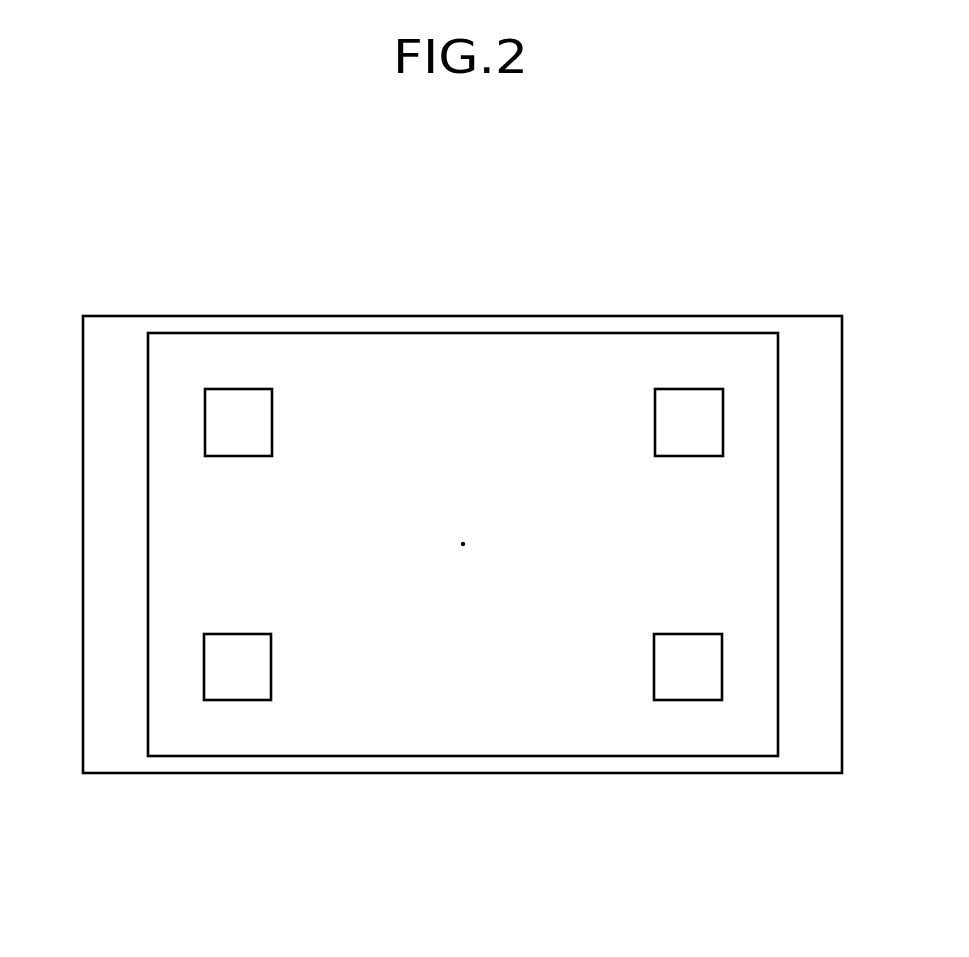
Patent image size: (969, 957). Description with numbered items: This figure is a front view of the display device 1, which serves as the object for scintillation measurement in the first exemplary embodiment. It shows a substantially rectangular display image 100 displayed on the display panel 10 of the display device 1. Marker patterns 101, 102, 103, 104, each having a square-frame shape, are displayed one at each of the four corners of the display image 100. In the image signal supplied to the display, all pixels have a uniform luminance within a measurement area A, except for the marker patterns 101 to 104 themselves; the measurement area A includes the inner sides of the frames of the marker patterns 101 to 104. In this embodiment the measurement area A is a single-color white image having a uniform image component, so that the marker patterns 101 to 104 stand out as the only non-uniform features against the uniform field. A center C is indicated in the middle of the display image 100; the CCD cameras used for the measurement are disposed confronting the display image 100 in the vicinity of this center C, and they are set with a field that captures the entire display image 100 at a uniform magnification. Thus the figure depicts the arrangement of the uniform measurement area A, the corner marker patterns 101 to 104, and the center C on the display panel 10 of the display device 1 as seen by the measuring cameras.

The display device 1 is at (681, 237).
The display panel 10 is at (797, 317).
The display image 100 is at (489, 345).
The marker pattern 101 is at (242, 389).
The marker pattern 102 is at (242, 635).
The marker pattern 103 is at (688, 389).
The marker pattern 104 is at (687, 635).
The measurement area A is at (548, 738).
The center C is at (462, 528).